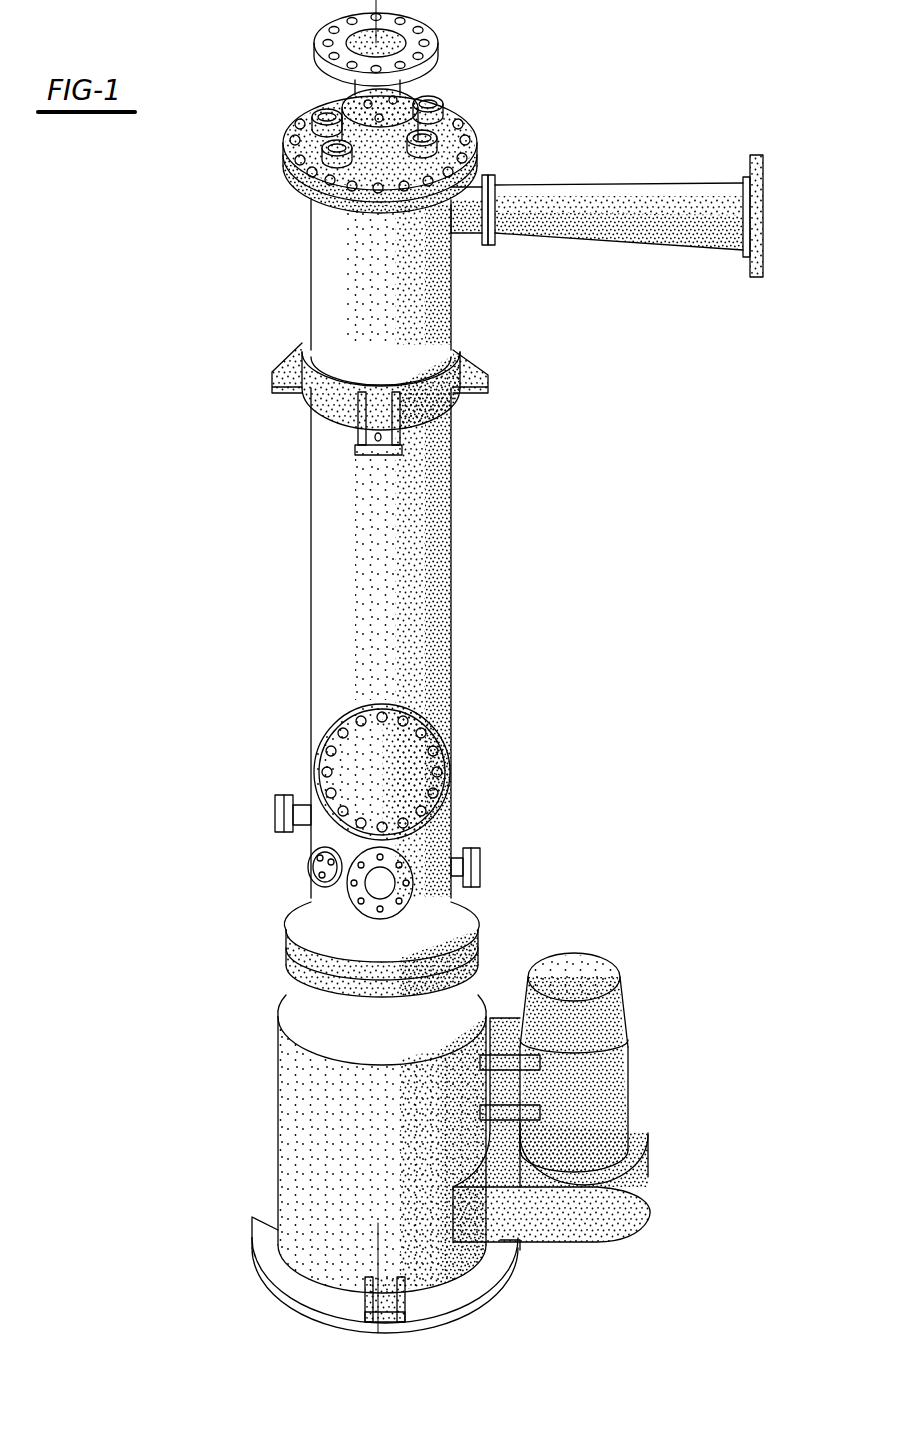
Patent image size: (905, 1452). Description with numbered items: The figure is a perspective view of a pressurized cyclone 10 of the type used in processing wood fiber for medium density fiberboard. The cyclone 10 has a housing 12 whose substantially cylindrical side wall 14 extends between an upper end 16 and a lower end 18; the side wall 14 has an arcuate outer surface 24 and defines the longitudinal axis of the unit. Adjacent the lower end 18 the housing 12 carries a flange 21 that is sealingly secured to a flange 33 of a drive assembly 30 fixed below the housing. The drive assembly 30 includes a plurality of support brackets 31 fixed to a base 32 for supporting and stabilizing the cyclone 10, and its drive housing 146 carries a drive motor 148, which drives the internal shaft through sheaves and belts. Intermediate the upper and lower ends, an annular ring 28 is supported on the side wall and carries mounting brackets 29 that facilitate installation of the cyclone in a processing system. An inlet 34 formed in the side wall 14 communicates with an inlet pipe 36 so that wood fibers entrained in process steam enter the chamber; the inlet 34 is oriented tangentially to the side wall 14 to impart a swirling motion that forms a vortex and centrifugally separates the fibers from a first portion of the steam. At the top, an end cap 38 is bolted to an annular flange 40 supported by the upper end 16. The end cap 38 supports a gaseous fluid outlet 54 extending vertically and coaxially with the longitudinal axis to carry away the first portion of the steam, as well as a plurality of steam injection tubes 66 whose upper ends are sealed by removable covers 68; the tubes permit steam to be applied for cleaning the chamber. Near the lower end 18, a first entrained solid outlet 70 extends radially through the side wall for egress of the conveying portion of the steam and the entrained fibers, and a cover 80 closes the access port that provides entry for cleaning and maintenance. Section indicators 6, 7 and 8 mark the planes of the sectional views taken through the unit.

The pressurized cyclone 10 is at (472, 673).
The housing 12 is at (391, 549).
The side wall 14 is at (321, 548).
The upper end 16 is at (369, 149).
The lower end 18 is at (451, 1117).
The flange 21 is at (300, 938).
The outer surface 24 is at (378, 597).
The annular ring 28 is at (455, 415).
The mounting brackets 29 is at (485, 380).
The drive assembly 30 is at (347, 1139).
The support brackets 31 is at (515, 1247).
The base 32 is at (425, 1285).
The flange 33 is at (312, 986).
The inlet 34 is at (470, 235).
The inlet pipe 36 is at (630, 185).
The end cap 38 is at (304, 118).
The annular flange 40 is at (302, 208).
The gaseous fluid outlet 54 is at (290, 158).
The steam injection tubes 66 is at (408, 152).
The removable covers 68 is at (320, 108).
The first entrained solid outlet 70 is at (290, 830).
The cover 80 is at (445, 775).
The drive housing 146 is at (470, 1283).
The drive motor 148 is at (628, 1072).
The section line 6- 6 is at (295, 659).
The section line 7- 7 is at (313, 885).
The section line 8- 8 is at (430, 890).